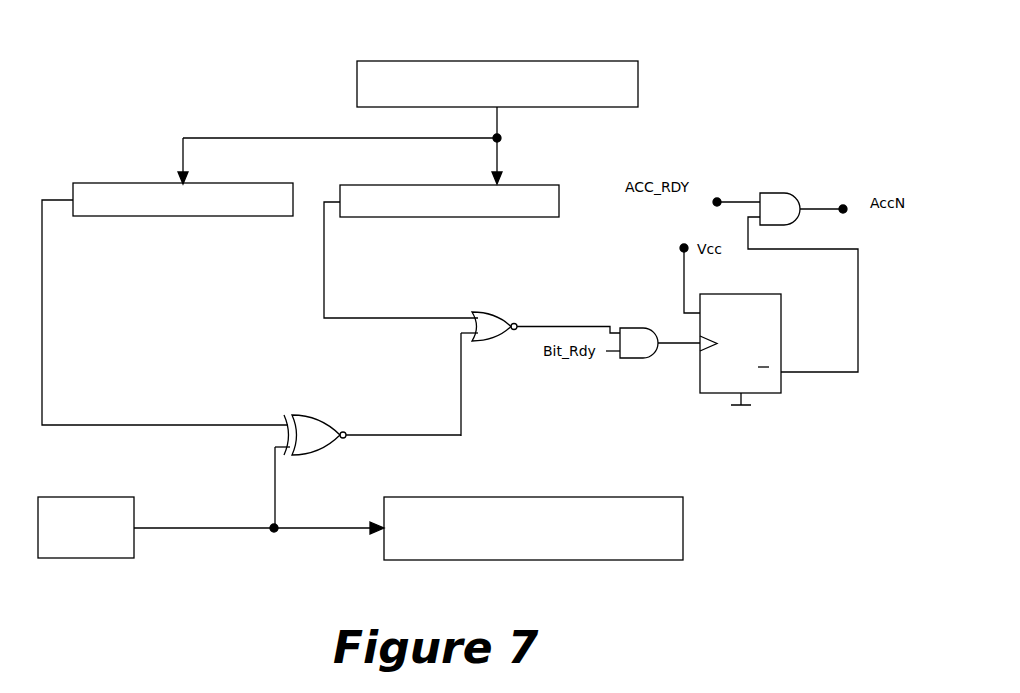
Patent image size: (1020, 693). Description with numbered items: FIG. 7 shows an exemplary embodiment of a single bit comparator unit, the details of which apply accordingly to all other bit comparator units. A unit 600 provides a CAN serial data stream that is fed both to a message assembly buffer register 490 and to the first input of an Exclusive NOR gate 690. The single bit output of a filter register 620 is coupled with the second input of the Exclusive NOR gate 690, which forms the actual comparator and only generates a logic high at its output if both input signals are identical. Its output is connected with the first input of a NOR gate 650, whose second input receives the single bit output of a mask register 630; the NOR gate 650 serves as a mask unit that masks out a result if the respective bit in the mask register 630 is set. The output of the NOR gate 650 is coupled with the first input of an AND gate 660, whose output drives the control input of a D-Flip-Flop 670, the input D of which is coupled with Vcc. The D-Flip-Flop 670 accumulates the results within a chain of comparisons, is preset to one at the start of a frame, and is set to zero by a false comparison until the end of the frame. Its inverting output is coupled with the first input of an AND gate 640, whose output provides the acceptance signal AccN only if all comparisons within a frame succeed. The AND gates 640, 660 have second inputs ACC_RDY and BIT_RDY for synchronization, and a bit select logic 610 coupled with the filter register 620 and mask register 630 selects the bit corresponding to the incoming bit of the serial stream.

The bit select logic 610 is at (635, 73).
The filter register 620 is at (220, 216).
The mask register 630 is at (476, 217).
The AND gate 640 is at (765, 192).
The NOR gate 650 is at (494, 316).
The AND gate 660 is at (639, 357).
The D-Flip-Flop 670 is at (752, 294).
The Exclusive NOR gate 690 is at (318, 440).
The unit providing a CAN serial data stream 600 is at (90, 497).
The message assembly buffer register 490 is at (637, 497).